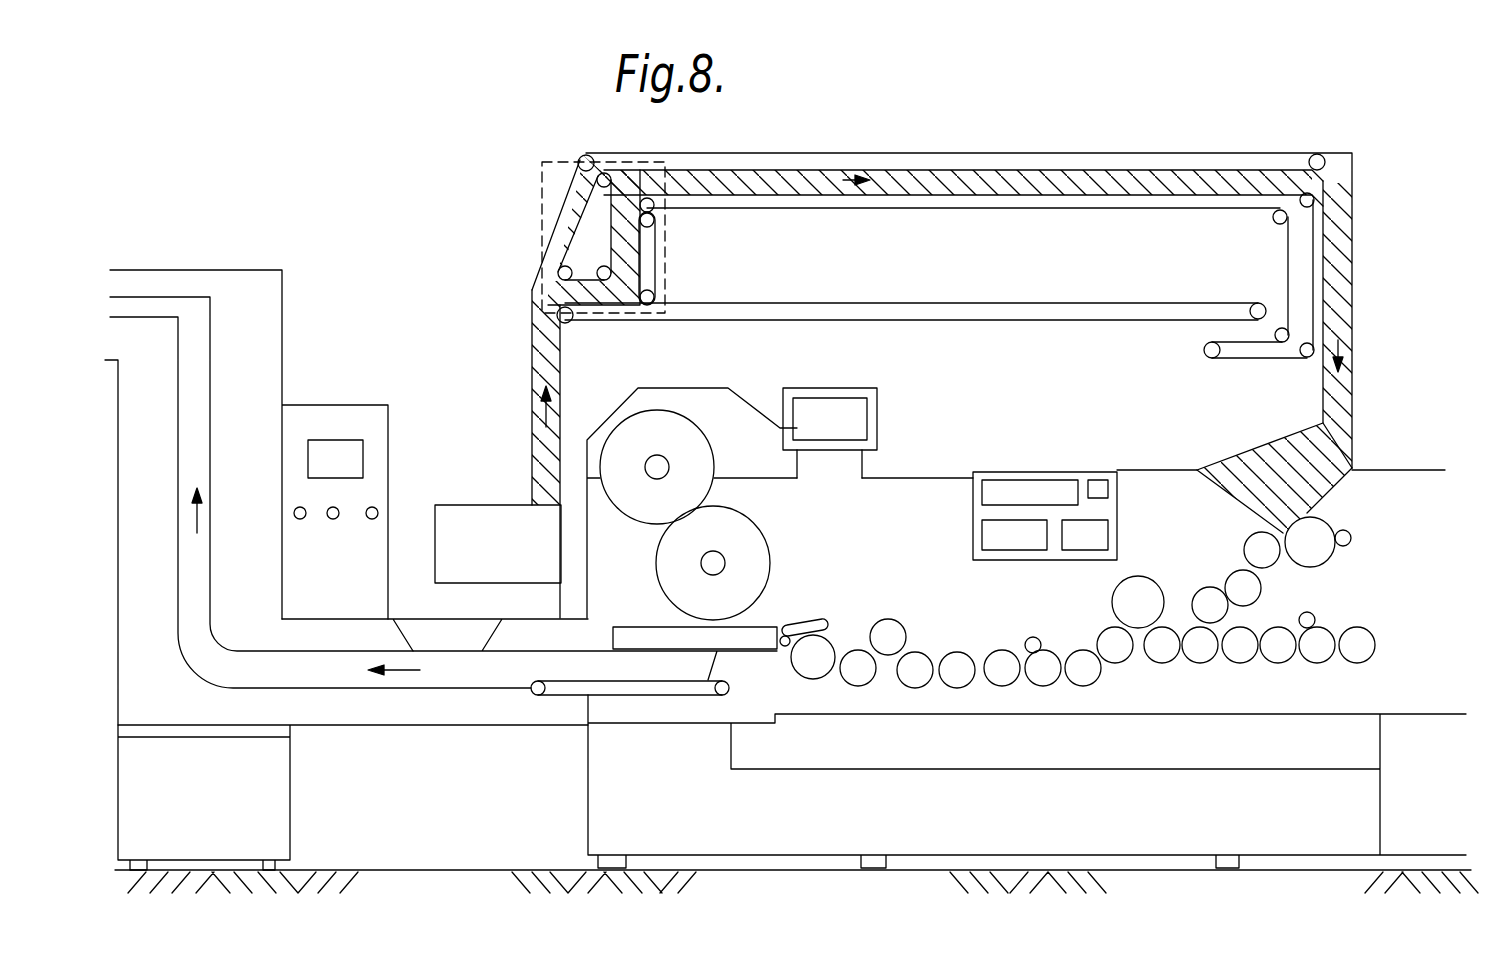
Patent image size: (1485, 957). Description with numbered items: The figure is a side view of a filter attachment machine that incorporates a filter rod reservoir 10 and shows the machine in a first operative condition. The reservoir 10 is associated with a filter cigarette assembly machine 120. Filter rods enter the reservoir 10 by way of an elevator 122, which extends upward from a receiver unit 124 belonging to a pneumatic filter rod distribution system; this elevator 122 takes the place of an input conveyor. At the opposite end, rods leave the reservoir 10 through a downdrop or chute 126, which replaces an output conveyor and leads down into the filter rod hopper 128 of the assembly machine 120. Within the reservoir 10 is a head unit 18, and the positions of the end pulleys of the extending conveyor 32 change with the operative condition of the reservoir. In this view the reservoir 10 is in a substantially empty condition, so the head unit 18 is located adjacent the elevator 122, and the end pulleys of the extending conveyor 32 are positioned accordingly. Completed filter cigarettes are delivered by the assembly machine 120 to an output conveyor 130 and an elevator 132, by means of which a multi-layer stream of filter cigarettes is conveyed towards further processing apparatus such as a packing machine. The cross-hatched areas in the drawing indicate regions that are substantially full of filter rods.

The reservoir 10 is at (962, 147).
The head unit 18 is at (665, 243).
The extending conveyor 32 is at (1232, 341).
The filter cigarette assembly machine 120 is at (1040, 466).
The elevator 122 is at (530, 428).
The receiver unit 124 is at (522, 561).
The downdrop 126 is at (1350, 277).
The filter rod hopper 128 is at (1263, 472).
The output conveyor 130 is at (518, 668).
The elevator 132 is at (200, 432).